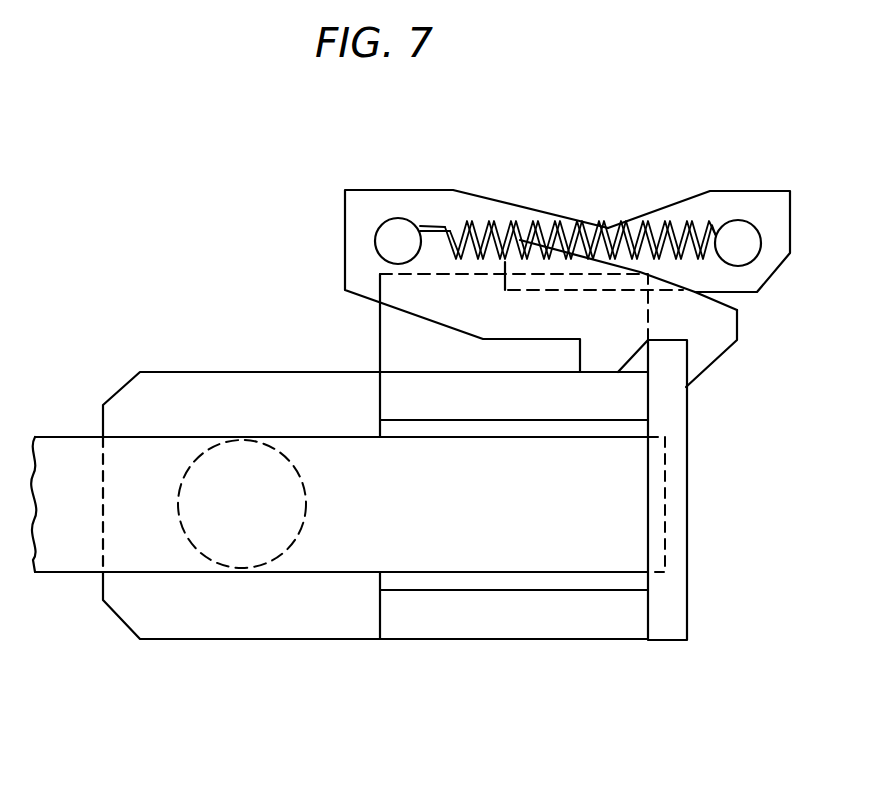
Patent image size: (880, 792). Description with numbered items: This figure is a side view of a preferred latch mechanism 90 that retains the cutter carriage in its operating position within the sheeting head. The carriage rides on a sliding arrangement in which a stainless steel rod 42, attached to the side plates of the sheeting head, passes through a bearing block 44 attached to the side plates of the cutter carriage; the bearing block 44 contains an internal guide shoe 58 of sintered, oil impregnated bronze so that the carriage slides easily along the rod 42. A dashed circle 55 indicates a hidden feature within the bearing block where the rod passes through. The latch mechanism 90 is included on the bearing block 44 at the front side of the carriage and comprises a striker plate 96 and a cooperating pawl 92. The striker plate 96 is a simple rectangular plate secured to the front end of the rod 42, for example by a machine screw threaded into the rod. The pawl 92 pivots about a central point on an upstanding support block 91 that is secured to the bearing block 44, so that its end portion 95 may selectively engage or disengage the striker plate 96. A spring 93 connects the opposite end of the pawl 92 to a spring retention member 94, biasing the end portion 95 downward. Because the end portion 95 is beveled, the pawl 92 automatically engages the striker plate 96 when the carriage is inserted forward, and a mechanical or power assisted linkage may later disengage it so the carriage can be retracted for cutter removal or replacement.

The rod 42 is at (77, 450).
The bearing block 44 is at (602, 625).
The cross bore 55 is at (225, 470).
The internal guide shoe 58 is at (410, 582).
The latch mechanism 90 is at (623, 133).
The upstanding support block 91 is at (395, 328).
The pawl 92 is at (393, 208).
The spring 93 is at (572, 227).
The spring retention member 94 is at (727, 197).
The end portion 95 is at (707, 353).
The striker plate 96 is at (672, 595).